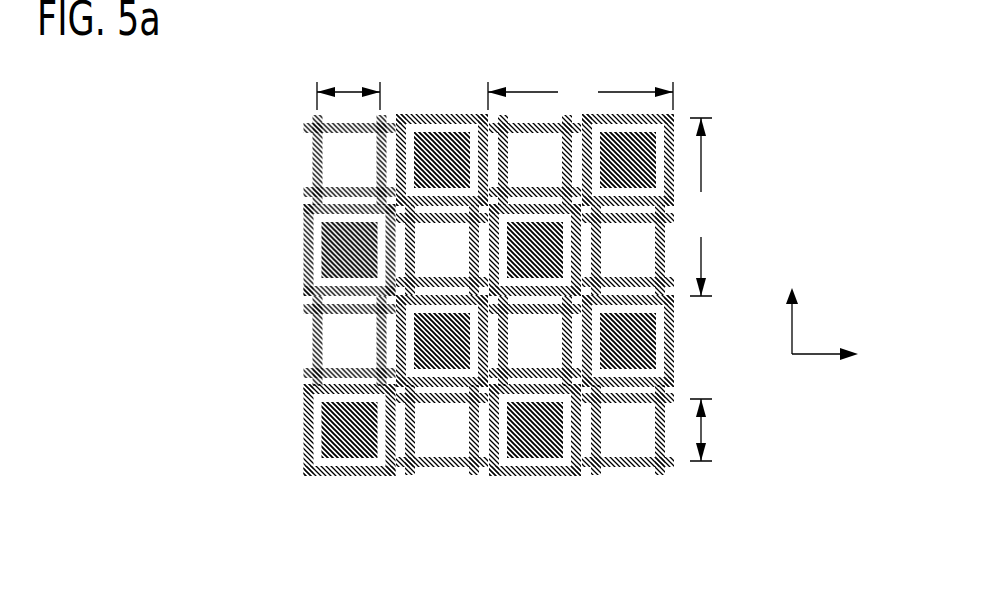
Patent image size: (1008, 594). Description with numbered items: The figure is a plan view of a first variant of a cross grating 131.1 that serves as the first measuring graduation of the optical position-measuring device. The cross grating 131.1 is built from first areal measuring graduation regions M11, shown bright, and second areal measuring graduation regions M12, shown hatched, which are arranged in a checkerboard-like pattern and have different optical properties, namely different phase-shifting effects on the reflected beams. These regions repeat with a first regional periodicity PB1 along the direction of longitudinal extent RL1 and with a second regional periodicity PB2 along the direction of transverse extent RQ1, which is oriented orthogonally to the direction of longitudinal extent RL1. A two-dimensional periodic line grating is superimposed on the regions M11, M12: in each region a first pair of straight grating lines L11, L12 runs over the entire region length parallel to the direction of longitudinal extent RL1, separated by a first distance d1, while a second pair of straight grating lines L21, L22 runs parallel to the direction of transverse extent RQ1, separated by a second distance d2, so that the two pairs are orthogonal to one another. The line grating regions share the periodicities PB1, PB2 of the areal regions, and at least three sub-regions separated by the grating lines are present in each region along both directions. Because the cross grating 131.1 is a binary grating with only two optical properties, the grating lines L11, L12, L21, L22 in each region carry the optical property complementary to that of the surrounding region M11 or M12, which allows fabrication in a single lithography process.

The cross grating 131.1 is at (196, 266).
The first areal measuring graduation region M11 is at (335, 160).
The second areal measuring graduation region M12 is at (335, 251).
The first grating line of the first pair L11 is at (302, 402).
The second grating line of the first pair L12 is at (302, 465).
The first grating line of the second pair L21 is at (317, 477).
The second grating line of the second pair L22 is at (380, 477).
The first distance d1 is at (703, 432).
The second distance d2 is at (348, 92).
The first regional periodicity PB1 is at (580, 90).
The second regional periodicity PB2 is at (701, 207).
The direction of transverse extent RQ1 is at (773, 311).
The direction of longitudinal extent RL1 is at (841, 357).